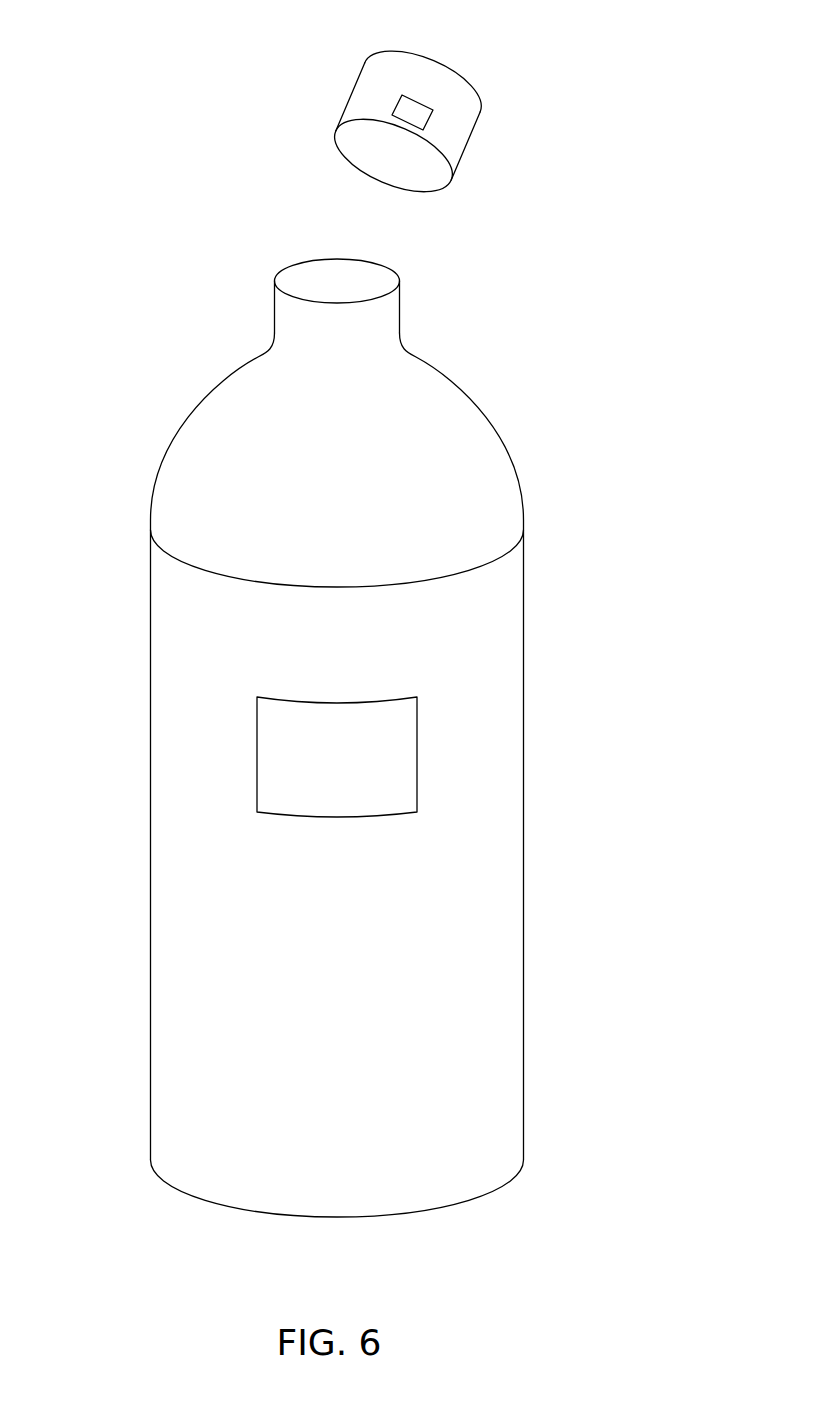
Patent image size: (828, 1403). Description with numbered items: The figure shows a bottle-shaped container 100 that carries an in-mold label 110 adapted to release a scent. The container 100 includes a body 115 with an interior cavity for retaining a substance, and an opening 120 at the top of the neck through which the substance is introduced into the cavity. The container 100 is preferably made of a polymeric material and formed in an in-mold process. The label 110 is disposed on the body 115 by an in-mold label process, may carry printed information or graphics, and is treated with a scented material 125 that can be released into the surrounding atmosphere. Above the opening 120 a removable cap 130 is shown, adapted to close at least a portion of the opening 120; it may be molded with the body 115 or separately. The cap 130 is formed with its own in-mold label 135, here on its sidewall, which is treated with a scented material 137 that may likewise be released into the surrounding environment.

The container 100 is at (371, 719).
The in-mold label 110 is at (340, 757).
The body 115 is at (150, 603).
The opening 120 is at (300, 263).
The scented material 125 is at (282, 788).
The cap 130 is at (460, 106).
The in-mold label 135 is at (461, 67).
The scented material 137 is at (418, 110).